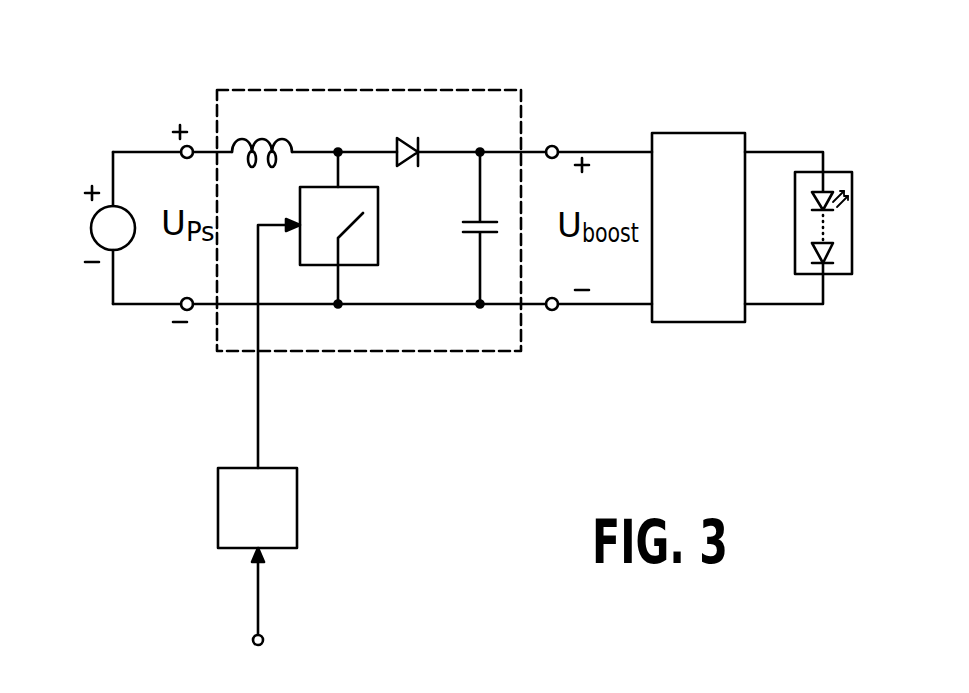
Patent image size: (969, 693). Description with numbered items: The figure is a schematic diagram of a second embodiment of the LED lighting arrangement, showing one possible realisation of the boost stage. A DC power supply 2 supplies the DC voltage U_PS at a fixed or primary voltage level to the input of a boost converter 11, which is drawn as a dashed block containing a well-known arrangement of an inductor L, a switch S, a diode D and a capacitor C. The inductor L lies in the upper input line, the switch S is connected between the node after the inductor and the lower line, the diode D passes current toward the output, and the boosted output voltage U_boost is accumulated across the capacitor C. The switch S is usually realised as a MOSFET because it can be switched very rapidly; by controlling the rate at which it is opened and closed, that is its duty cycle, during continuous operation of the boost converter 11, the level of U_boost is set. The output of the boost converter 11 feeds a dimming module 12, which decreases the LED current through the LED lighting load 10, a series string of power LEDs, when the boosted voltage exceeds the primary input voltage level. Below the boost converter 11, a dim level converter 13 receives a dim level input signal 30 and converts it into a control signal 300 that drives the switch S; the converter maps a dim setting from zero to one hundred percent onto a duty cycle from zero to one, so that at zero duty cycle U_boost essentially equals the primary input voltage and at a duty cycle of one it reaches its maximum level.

The DC power supply 2 is at (91, 228).
The boost converter 11 is at (462, 90).
The inductor L is at (282, 139).
The diode D is at (405, 136).
The switch S is at (378, 235).
The capacitor C is at (480, 216).
The dimming module 12 is at (707, 133).
The LED lighting load 10 is at (836, 172).
The control signal 300 is at (258, 415).
The dim level converter 13 is at (297, 510).
The dim level input signal 30 is at (258, 595).